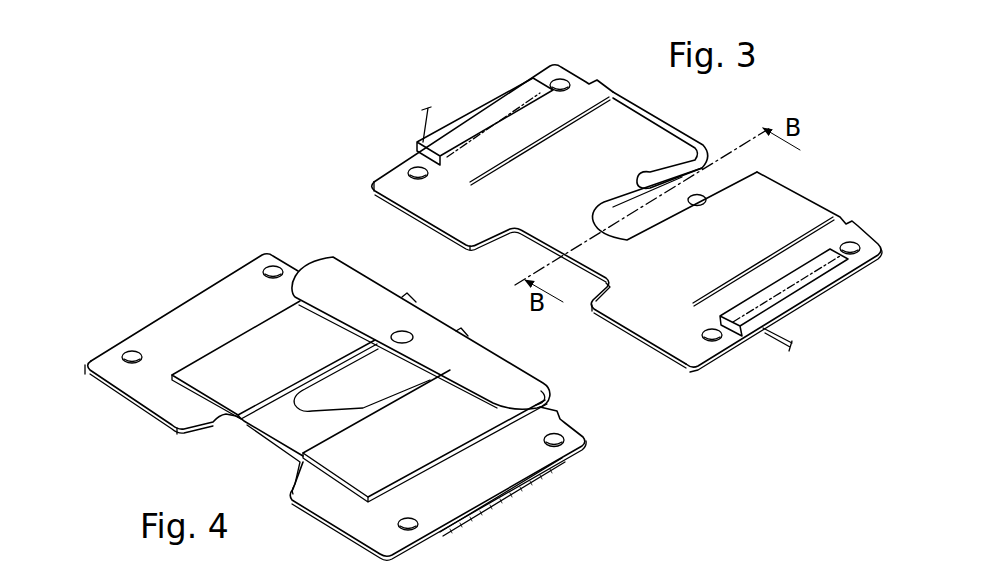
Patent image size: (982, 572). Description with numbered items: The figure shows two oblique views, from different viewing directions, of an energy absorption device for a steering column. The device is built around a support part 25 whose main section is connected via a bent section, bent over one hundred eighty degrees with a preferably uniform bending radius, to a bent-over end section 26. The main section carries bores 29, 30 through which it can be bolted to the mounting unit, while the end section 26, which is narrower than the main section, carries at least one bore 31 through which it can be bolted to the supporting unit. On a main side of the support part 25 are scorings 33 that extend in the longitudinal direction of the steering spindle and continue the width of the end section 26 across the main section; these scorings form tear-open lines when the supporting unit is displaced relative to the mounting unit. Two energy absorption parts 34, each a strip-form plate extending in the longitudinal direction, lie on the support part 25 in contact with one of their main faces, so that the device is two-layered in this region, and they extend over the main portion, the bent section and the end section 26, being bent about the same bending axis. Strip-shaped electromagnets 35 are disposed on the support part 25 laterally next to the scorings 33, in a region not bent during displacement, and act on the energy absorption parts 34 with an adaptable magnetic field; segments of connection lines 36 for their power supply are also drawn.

In FIG. 3, the support part 25 is at (560, 230).
In FIG. 3, the bent-over end section 26 is at (700, 178).
In FIG. 4, the bent-over end section 26 is at (477, 365).
In FIG. 3, the bore 29 is at (410, 173).
In FIG. 4, the bore 29 is at (128, 356).
In FIG. 3, the bore 30 is at (558, 85).
In FIG. 4, the bore 30 is at (270, 271).
In FIG. 3, the bore 31 is at (708, 194).
In FIG. 4, the bore 31 is at (414, 338).
In FIG. 3, the scorings 33 is at (553, 128).
In FIG. 4, the energy absorption part 34 is at (268, 337).
In FIG. 3, the electromagnet 35 is at (487, 113).
In FIG. 3, the connection line 36 is at (423, 127).